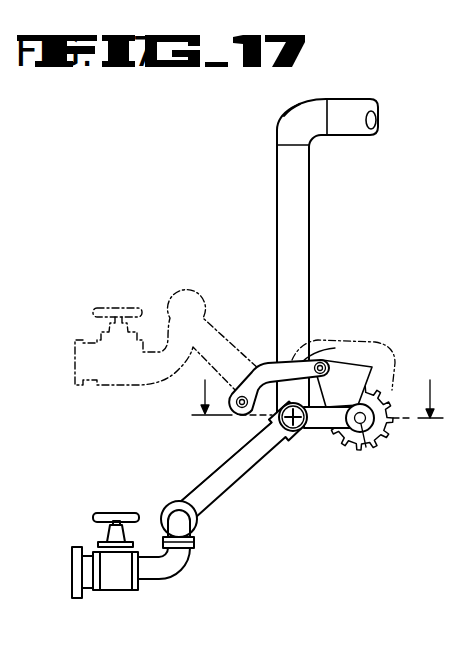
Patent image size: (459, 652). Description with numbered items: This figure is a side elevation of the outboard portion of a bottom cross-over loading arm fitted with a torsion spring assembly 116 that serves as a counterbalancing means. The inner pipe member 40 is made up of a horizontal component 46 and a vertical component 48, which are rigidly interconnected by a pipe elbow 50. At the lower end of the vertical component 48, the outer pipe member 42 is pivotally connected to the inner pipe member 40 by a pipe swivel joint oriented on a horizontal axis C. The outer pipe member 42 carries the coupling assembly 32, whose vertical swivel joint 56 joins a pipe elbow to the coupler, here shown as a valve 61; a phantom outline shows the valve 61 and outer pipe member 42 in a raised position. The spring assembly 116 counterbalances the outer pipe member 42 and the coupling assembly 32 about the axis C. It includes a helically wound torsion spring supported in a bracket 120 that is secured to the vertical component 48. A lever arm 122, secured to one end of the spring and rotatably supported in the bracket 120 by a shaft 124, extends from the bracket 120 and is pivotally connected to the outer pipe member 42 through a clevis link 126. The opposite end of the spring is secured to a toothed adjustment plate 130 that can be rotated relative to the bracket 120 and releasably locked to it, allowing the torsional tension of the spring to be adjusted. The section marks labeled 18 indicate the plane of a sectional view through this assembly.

The section line 18- 18 is at (315, 399).
The coupling assembly 32 is at (190, 577).
The inner pipe member 40 is at (311, 184).
The outer pipe member 42 is at (222, 488).
The horizontal component 46 is at (352, 107).
The vertical component 48 is at (295, 207).
The pipe elbow 50 is at (282, 124).
The vertical swivel joint 56 is at (195, 541).
The valve 61 is at (117, 590).
The spring assembly 116 is at (357, 458).
The bracket 120 is at (322, 428).
The lever arm 122 is at (336, 376).
The shaft 124 is at (362, 420).
The clevis link 126 is at (265, 370).
The toothed adjustment plate 130 is at (396, 430).
The horizontal axis C is at (285, 446).